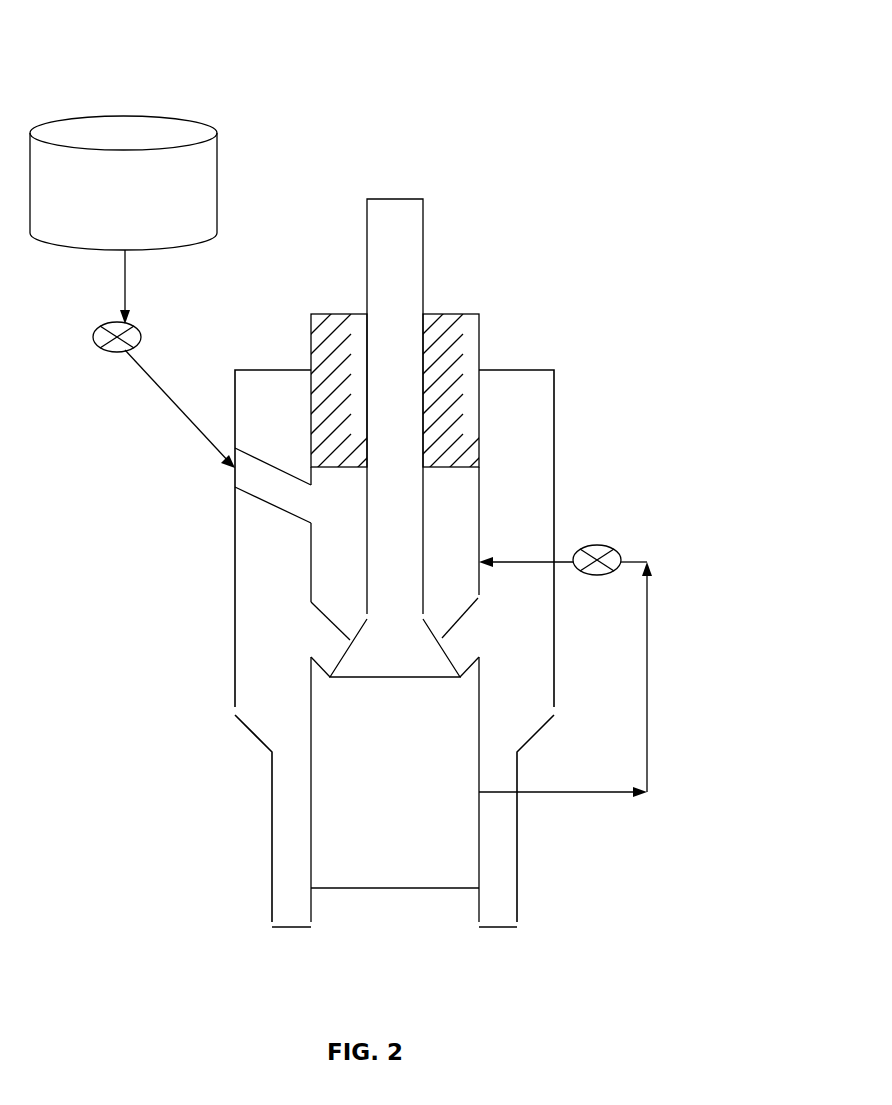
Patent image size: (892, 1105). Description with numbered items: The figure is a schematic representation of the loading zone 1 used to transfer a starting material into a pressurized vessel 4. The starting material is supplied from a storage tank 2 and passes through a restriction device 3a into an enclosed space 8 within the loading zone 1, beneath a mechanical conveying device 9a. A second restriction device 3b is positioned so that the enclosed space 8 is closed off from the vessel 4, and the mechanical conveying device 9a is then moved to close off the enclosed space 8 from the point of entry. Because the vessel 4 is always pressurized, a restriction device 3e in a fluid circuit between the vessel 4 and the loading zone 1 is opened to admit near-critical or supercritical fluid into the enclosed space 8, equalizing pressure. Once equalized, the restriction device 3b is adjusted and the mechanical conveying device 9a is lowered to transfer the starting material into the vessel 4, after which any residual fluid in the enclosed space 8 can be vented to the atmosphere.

The loading zone 1 is at (560, 154).
The storage tank 2 is at (123, 179).
The restriction device 3a is at (178, 422).
The restriction device 3b is at (420, 618).
The restriction device 3e is at (565, 654).
The vessel 4 is at (395, 789).
The enclosed space 8 is at (442, 534).
The mechanical conveying device 9a is at (487, 330).